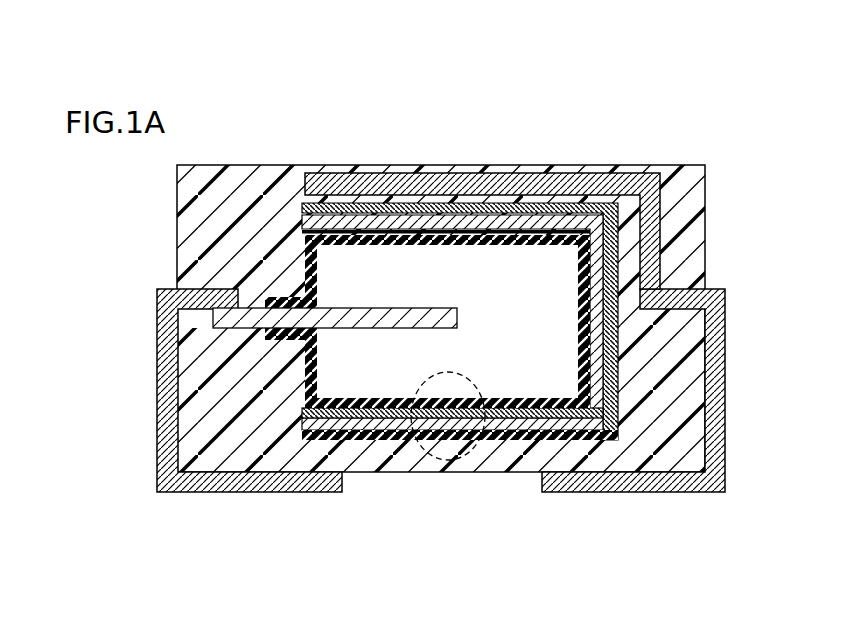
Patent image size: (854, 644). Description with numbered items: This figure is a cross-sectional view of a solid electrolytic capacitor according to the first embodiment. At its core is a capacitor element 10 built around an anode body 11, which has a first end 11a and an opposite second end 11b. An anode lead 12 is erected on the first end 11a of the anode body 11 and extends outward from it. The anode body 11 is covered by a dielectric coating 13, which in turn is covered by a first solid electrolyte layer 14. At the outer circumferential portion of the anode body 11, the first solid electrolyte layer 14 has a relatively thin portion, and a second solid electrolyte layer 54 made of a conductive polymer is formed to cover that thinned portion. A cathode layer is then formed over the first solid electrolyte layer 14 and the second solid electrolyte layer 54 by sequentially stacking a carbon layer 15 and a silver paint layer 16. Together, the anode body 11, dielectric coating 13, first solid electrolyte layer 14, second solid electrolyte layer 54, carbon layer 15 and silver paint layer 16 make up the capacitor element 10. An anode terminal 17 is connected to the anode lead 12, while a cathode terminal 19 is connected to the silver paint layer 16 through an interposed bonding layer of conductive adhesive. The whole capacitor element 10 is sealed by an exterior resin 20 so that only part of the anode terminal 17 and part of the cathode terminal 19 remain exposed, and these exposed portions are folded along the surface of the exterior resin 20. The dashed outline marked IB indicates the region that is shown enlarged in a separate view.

The capacitor element 10 is at (460, 391).
The anode body 11 is at (451, 385).
The first end 11a is at (333, 383).
The second end 11b is at (562, 380).
The anode lead 12 is at (215, 326).
The dielectric coating 13 is at (384, 405).
The first solid electrolyte layer 14 is at (412, 416).
The carbon layer 15 is at (492, 404).
The silver paint layer 16 is at (518, 412).
The anode terminal 17 is at (175, 367).
The cathode terminal 19 is at (606, 185).
The exterior resin 20 is at (675, 197).
The second solid electrolyte layer 54 is at (452, 425).
The IB region IB is at (466, 372).